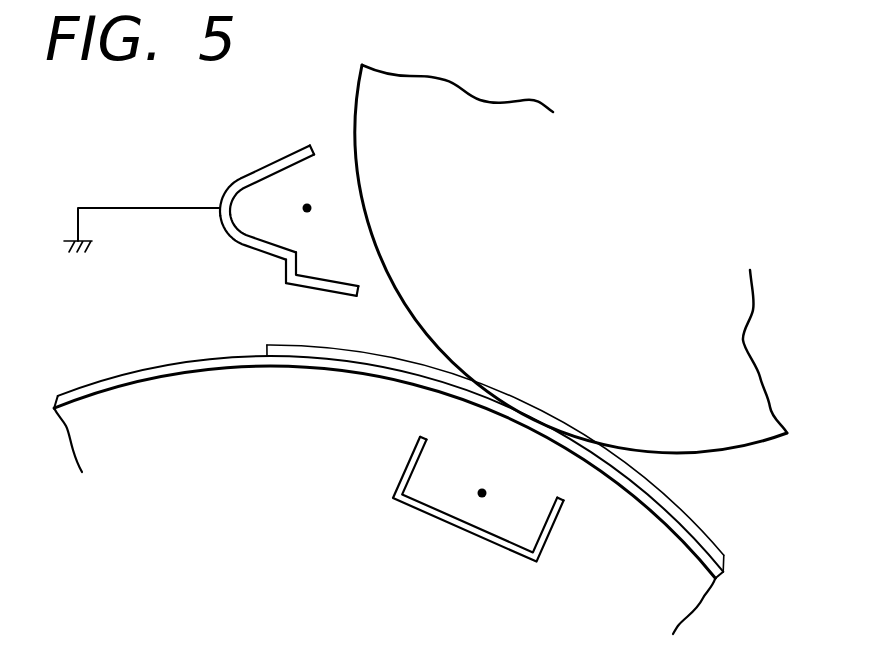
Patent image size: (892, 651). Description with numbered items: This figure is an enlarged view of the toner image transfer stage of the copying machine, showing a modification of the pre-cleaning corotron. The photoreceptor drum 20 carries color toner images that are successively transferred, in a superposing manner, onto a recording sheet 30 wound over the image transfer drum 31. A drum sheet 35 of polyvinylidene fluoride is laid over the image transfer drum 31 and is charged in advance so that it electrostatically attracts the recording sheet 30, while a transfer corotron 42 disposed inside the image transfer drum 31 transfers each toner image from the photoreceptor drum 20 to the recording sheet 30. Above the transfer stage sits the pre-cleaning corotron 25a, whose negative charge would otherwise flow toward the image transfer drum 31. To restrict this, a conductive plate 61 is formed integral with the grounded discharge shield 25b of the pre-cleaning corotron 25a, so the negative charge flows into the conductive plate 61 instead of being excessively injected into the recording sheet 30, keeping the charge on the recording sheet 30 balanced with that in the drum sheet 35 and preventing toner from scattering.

The photoreceptor drum 20 is at (757, 443).
The recording sheet 30 is at (698, 522).
The drum sheet 35 is at (160, 378).
The image transfer drum 31 is at (249, 383).
The transfer corotron 42 is at (492, 548).
The pre-cleaning corotron 25a is at (271, 159).
The discharge shield 25b is at (232, 245).
The conductive plate 61 is at (330, 293).